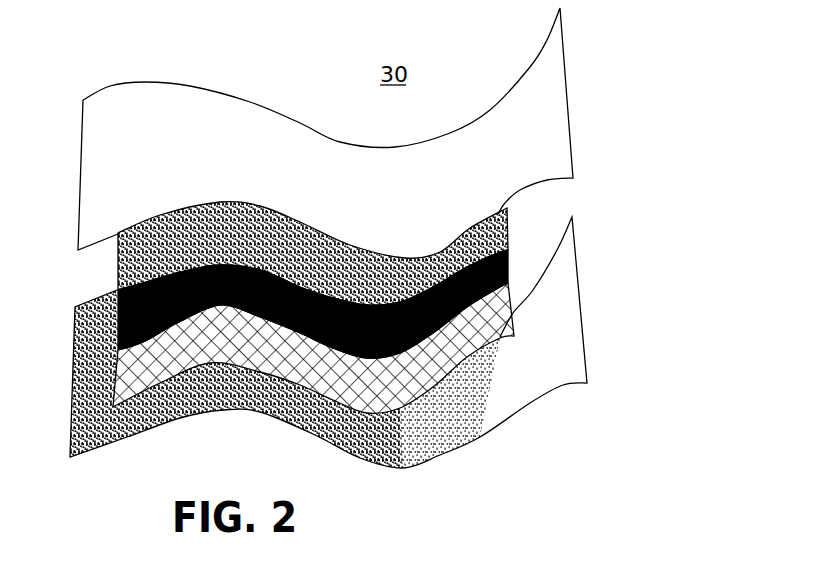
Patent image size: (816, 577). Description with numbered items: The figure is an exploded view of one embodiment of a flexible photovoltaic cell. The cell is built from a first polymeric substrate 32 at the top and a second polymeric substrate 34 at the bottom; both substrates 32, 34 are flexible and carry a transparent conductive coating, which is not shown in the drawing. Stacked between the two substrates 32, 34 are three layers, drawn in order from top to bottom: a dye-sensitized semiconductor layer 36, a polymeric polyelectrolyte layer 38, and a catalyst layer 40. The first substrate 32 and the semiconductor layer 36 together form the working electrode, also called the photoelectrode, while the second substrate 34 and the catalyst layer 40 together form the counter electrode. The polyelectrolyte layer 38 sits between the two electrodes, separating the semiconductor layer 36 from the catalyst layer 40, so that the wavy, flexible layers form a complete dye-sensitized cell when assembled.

The first polymeric substrate 32 is at (520, 125).
The second polymeric substrate 34 is at (568, 365).
The dye-sensitized semiconductor layer 36 is at (505, 227).
The polymeric polyelectrolyte layer 38 is at (510, 263).
The catalyst layer 40 is at (512, 313).